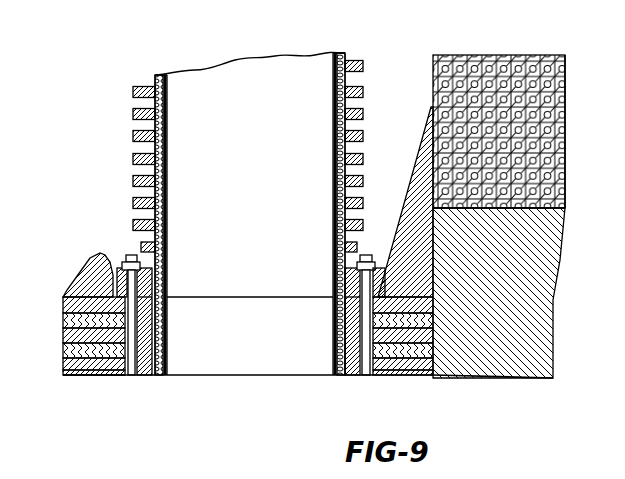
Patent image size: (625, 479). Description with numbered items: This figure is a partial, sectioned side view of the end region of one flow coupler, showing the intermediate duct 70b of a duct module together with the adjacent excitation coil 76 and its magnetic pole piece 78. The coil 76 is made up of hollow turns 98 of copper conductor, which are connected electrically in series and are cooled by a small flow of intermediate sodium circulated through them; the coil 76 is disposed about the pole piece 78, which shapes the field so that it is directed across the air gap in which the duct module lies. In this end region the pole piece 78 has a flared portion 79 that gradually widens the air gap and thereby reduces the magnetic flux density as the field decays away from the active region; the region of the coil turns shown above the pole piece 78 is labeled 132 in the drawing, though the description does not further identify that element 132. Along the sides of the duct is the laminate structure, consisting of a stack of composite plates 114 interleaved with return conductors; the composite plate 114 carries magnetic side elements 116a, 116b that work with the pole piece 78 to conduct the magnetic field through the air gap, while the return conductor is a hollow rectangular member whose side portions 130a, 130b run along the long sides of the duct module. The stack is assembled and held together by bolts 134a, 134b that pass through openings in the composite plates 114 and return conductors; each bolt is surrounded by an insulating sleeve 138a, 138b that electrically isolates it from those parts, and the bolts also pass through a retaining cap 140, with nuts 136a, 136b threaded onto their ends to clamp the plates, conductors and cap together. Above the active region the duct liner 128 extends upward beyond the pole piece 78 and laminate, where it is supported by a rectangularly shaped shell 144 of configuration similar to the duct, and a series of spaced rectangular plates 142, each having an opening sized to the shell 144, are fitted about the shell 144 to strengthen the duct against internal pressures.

The insulating brick block 132 is at (480, 53).
The excitation coil 76 is at (579, 96).
The hollow turns 98 is at (560, 197).
The magnetic pole piece 78 is at (540, 324).
The flared portions 79 is at (425, 131).
The supporting shell 144 is at (363, 74).
The rectangularly shaped plates 142 is at (363, 174).
The nut 136a is at (120, 262).
The nut 136b is at (377, 258).
The retaining cap 140 is at (167, 276).
The liner 128 is at (167, 334).
The side portion of return conductor 130a is at (63, 352).
The side portion of return conductor 130b is at (428, 378).
The side element 116a is at (88, 373).
The side element 116b is at (455, 363).
The composite plate 114 is at (104, 390).
The insulating sleeve 138a is at (125, 373).
The insulating sleeve 138b is at (355, 378).
The bolt 134a is at (133, 373).
The bolt 134b is at (370, 378).
The intermediate duct 70b is at (232, 372).